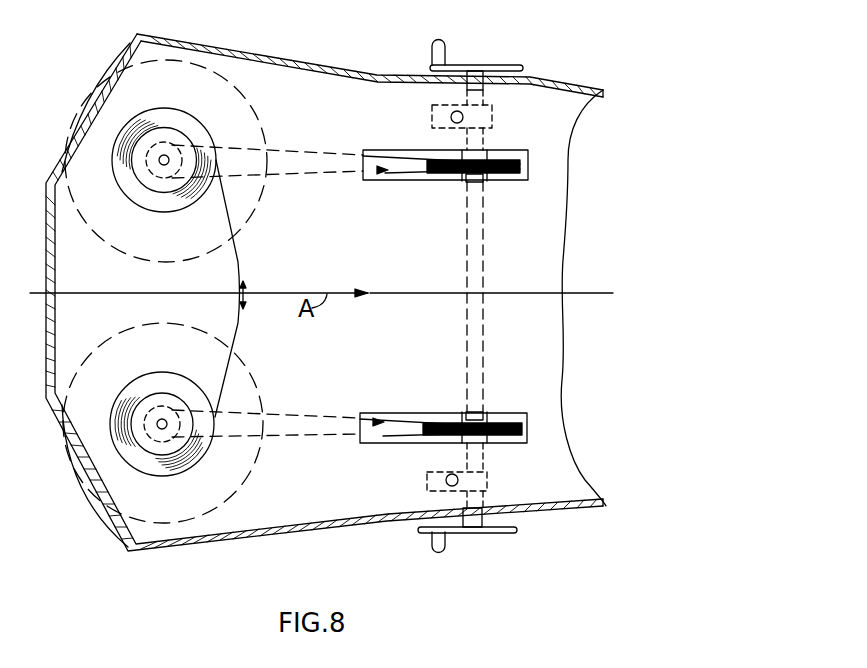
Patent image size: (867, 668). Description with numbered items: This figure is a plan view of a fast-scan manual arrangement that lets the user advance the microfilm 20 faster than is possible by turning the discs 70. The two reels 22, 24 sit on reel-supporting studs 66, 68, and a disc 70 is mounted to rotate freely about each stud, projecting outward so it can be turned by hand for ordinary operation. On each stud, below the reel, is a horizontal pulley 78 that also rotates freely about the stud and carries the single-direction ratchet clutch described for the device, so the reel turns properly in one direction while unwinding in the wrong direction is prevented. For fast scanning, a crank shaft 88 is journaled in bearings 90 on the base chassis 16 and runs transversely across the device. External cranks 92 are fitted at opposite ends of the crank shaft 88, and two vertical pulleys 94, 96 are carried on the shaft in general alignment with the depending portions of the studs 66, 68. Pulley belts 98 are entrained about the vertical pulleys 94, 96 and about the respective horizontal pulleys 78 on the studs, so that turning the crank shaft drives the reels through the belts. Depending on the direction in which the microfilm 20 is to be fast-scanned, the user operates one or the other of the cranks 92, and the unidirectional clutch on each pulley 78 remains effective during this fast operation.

The base chassis 16 is at (391, 351).
The microfilm 20 is at (238, 320).
The reel 22 is at (140, 167).
The reel 24 is at (137, 415).
The stud 66 is at (166, 156).
The stud 68 is at (163, 423).
The disc 70 is at (90, 95).
The horizontal pulley 78 is at (157, 177).
The crank shaft 88 is at (485, 268).
The bearing 90 is at (432, 112).
The crank 92 is at (516, 66).
The vertical pulley 94 is at (530, 151).
The vertical pulley 96 is at (527, 414).
The pulley belt 98 is at (315, 172).